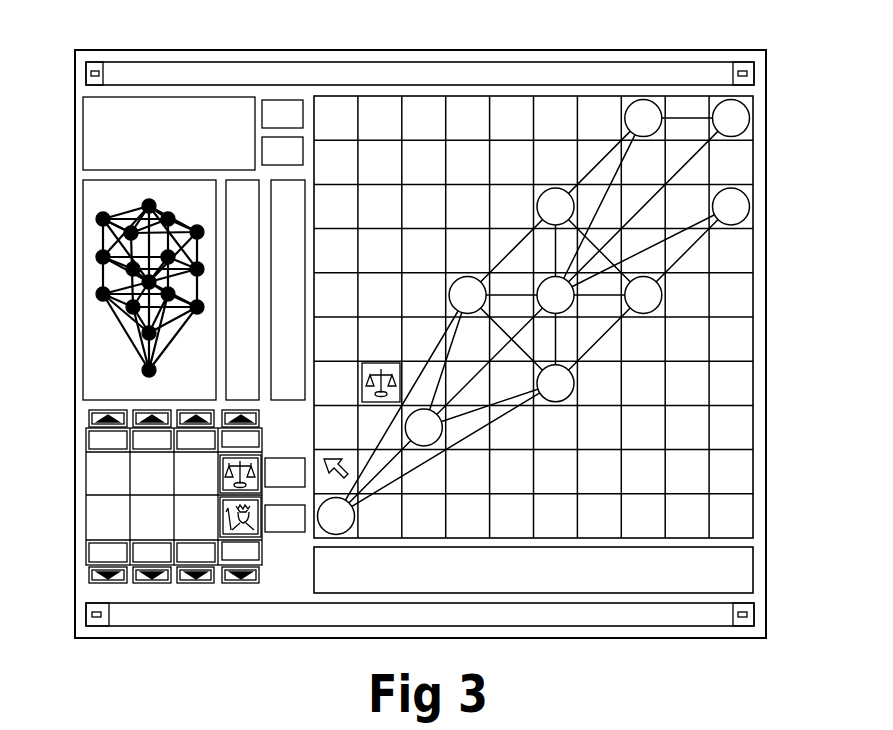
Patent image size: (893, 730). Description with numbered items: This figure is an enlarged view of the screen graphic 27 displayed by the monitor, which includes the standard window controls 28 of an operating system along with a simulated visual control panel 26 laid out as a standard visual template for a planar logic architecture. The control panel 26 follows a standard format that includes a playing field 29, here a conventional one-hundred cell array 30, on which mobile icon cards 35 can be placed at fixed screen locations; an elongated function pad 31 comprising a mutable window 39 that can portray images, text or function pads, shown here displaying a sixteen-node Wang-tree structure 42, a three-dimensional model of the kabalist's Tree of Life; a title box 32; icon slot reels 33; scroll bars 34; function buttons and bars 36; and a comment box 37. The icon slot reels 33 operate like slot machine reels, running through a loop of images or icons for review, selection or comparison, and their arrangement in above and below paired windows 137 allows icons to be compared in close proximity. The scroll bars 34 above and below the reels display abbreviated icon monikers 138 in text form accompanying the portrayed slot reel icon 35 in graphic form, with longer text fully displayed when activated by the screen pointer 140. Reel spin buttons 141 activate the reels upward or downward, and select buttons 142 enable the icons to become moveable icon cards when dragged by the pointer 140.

The visual control panel 26 is at (754, 132).
The screen graphic 27 is at (300, 50).
The window controls 28 is at (400, 62).
The playing field 29 is at (494, 96).
The 100 cell array 30 is at (424, 538).
The function pad 31 is at (96, 217).
The title box 32 is at (83, 165).
The icon slot reels 33 is at (266, 450).
The scroll bars 34 is at (263, 428).
The mobile icon cards 35 is at (220, 471).
The function buttons and bars 36 is at (303, 124).
The comment box 37 is at (316, 578).
The mutable window 39 is at (208, 213).
The Wang-tree structure 42 is at (212, 236).
The paired windows 137 is at (210, 534).
The abbreviated icon monikers 138 is at (218, 454).
The screen pointer 140 is at (338, 457).
The reel spin buttons 141 is at (147, 410).
The select buttons 142 is at (307, 468).